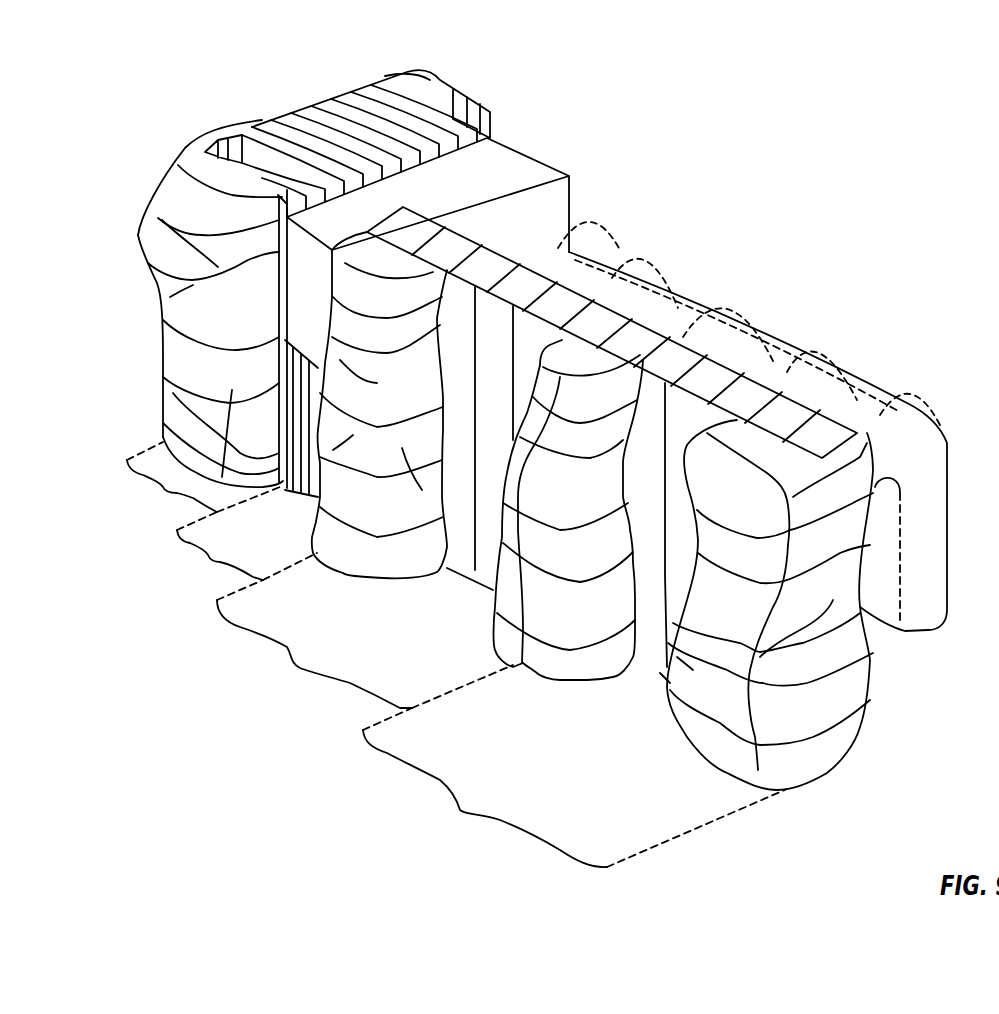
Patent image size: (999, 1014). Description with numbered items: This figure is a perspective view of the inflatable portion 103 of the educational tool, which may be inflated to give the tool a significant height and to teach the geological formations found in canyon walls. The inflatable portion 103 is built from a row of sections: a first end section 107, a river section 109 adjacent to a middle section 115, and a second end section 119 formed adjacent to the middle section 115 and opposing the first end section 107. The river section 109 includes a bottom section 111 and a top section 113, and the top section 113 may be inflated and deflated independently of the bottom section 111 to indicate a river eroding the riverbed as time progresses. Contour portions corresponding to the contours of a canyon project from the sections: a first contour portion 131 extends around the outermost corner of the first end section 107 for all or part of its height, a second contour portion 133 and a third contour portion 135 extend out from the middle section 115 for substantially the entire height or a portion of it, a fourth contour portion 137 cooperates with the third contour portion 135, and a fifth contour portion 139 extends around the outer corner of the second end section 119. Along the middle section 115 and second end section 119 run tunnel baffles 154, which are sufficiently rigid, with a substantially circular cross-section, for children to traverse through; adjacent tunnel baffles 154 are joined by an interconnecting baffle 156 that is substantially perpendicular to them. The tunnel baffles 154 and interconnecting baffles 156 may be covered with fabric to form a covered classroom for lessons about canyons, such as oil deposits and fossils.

The inflatable portion 103 is at (114, 88).
The first end section 107 is at (201, 479).
The river section 109 is at (243, 550).
The bottom section 111 is at (163, 390).
The top section 113 is at (522, 155).
The middle section 115 is at (365, 644).
The second end section 119 is at (575, 787).
The first contour portion 131 is at (138, 233).
The second contour portion 133 is at (360, 560).
The third contour portion 135 is at (498, 630).
The fourth contour portion 137 is at (580, 672).
The fifth contour portion 139 is at (720, 757).
The tunnel baffle 154 is at (558, 246).
The interconnecting baffle 156 is at (620, 266).